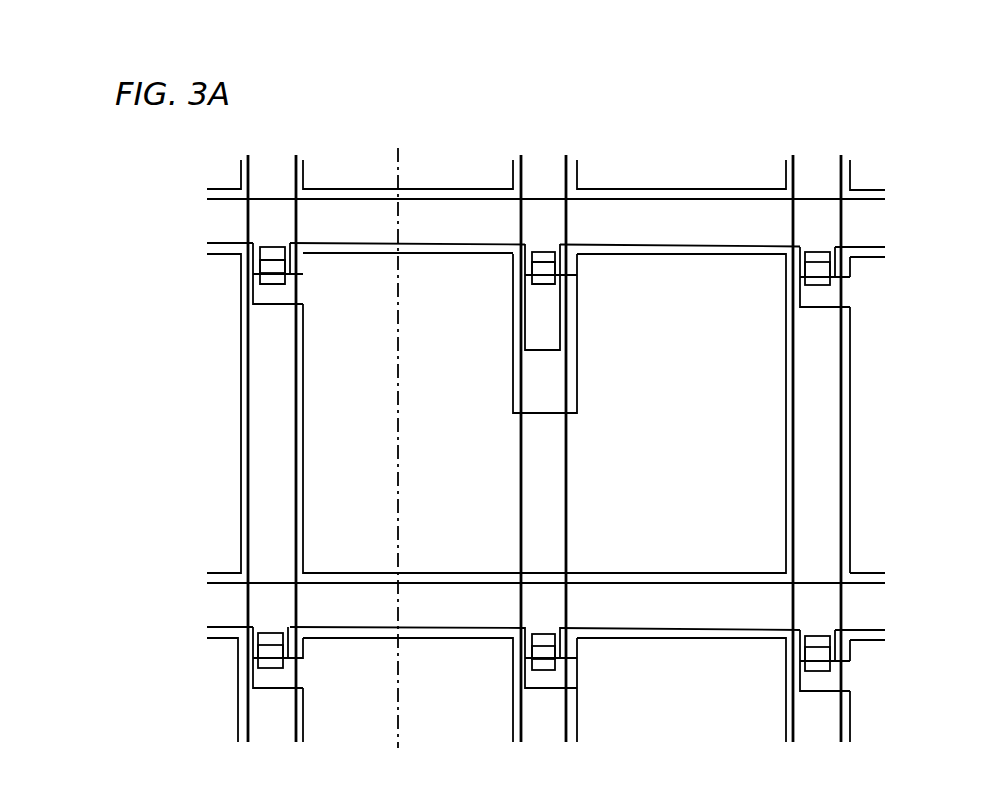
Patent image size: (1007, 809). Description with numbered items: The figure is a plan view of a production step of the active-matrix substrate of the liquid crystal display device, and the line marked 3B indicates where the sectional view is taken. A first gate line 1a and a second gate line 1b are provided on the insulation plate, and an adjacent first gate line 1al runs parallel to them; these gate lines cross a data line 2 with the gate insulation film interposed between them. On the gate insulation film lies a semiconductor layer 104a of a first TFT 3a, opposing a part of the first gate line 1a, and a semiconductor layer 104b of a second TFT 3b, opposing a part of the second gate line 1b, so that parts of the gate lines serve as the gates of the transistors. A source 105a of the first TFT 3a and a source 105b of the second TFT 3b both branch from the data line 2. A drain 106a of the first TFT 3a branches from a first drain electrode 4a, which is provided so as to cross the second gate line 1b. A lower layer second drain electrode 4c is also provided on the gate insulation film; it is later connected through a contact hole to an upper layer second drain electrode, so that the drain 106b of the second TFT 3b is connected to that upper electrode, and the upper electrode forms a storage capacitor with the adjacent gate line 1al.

The first gate line 1a is at (292, 181).
The second gate line 1b is at (543, 164).
The first gate line adjacent to the gate line 1al is at (821, 181).
The data line 2 is at (208, 201).
The first TFT 3a is at (104, 225).
The second TFT 3b is at (698, 92).
The source of the first TFT 105a is at (268, 246).
The semiconductor layer of the first TFT 104a is at (265, 264).
The drain of the first TFT 106a is at (268, 288).
The source of the second TFT 105b is at (545, 248).
The semiconductor layer of the second TFT 104b is at (556, 266).
The drain of the second TFT 106b is at (550, 290).
The first drain electrode 4a is at (326, 358).
The lower layer second drain electrode 4c is at (536, 309).
The cross-section line 3B is at (399, 449).